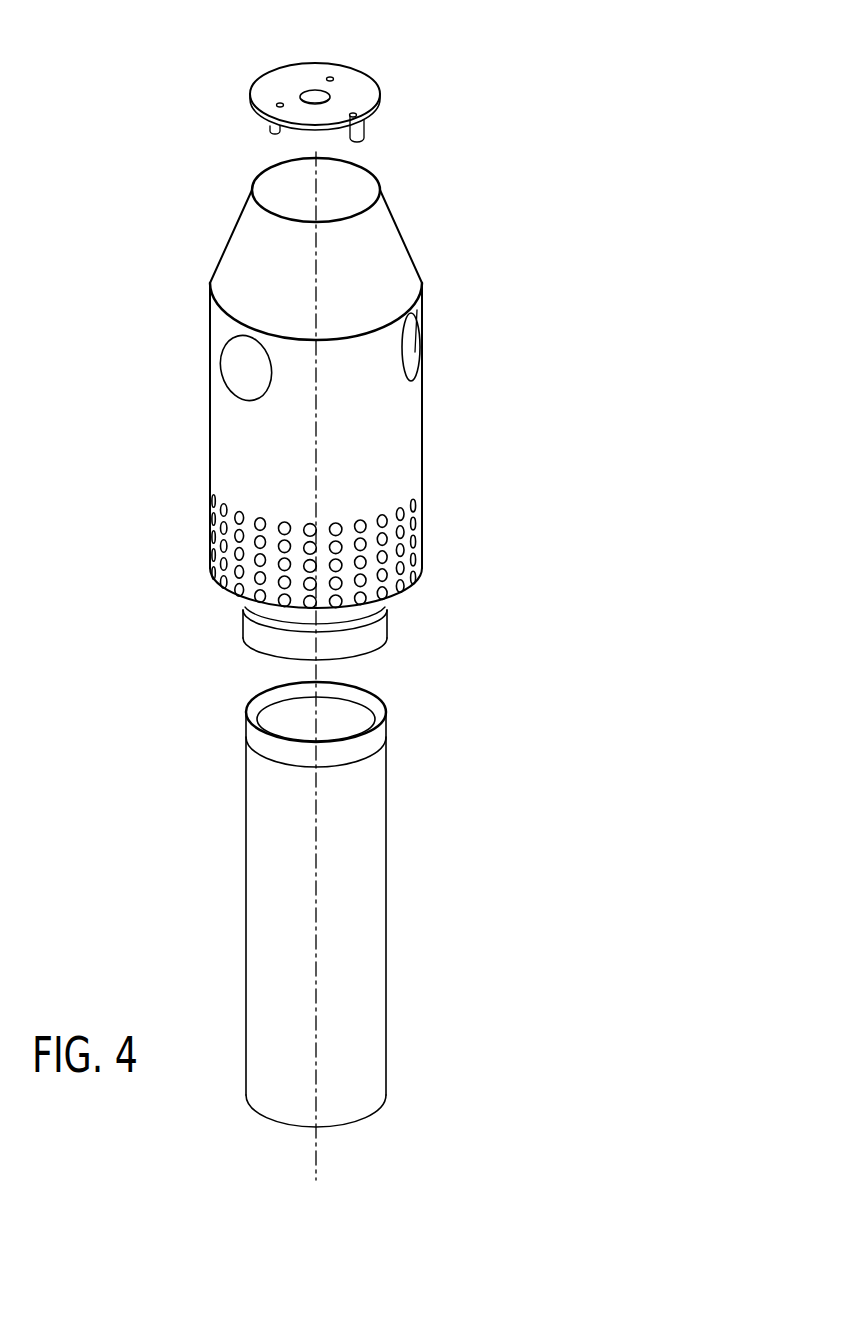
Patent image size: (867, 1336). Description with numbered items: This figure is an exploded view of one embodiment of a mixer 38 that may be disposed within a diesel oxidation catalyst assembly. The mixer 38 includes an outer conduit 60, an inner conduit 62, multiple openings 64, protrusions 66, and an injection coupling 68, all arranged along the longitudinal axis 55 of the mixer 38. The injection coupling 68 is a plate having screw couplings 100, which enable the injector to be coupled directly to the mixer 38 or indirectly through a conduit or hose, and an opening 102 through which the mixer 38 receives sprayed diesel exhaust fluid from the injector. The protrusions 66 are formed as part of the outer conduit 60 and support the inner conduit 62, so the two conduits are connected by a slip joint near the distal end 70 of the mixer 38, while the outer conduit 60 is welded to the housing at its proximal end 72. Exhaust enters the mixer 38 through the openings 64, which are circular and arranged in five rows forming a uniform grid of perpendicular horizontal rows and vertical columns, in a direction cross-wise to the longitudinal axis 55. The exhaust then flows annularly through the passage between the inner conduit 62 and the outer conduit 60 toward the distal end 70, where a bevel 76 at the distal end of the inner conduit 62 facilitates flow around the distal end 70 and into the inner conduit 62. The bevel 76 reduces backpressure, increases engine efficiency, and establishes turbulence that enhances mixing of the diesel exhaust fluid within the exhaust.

The mixer 38 is at (500, 200).
The longitudinal axis 55 is at (318, 1155).
The outer conduit 60 is at (422, 410).
The inner conduit 62 is at (388, 905).
The openings 64 is at (430, 480).
The protrusions 66 is at (235, 367).
The injection coupling 68 is at (378, 88).
The distal end 70 is at (265, 700).
The proximal end 72 is at (380, 632).
The bevel 76 is at (388, 728).
The screw couplings 100 is at (332, 75).
The opening 102 is at (312, 88).